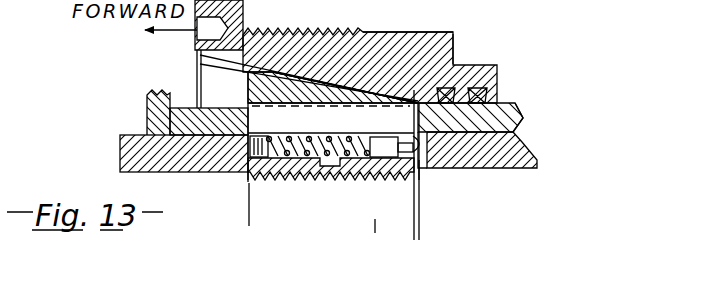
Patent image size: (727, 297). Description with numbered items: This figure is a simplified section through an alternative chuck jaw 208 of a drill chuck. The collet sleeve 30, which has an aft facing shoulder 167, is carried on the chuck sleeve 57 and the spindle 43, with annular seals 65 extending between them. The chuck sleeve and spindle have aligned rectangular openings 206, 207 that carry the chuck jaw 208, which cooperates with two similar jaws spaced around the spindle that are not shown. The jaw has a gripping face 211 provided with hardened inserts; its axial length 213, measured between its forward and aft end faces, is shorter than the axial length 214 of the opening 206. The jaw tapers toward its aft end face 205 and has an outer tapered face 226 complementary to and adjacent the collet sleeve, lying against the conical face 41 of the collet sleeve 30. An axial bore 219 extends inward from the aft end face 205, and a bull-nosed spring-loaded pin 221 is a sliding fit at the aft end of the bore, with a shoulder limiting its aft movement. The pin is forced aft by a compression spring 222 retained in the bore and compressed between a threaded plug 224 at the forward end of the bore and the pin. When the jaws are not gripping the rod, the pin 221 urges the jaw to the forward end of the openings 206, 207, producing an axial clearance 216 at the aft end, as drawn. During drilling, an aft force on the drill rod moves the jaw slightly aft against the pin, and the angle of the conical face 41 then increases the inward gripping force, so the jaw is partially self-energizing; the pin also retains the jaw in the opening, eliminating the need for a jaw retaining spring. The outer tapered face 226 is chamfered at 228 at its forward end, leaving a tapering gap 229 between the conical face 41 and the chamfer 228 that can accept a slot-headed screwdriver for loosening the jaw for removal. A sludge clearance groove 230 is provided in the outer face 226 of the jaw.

The collet sleeve 30 is at (432, 2).
The aft facing shoulder 167 is at (460, 44).
The chamfer 228 is at (262, 74).
The outer tapered face 226 is at (348, 90).
The conical face 41 is at (200, 56).
The tapering gap 229 is at (226, 70).
The sludge clearance groove 230 is at (252, 92).
The annular seals 65 is at (490, 95).
The aft end face 205 is at (430, 118).
The chuck sleeve 57 is at (518, 118).
The spindle 43 is at (500, 170).
The rectangular opening 206 is at (428, 166).
The rectangular opening 207 is at (430, 172).
The threaded plug 224 is at (300, 108).
The compression spring 222 is at (312, 108).
The spring-loaded pin 221 is at (376, 108).
The axial bore 219 is at (250, 181).
The chuck jaw 208 is at (246, 196).
The gripping face 211 is at (337, 176).
The axial length 213 is at (411, 203).
The axial length 214 is at (411, 230).
The axial clearance 216 is at (423, 230).